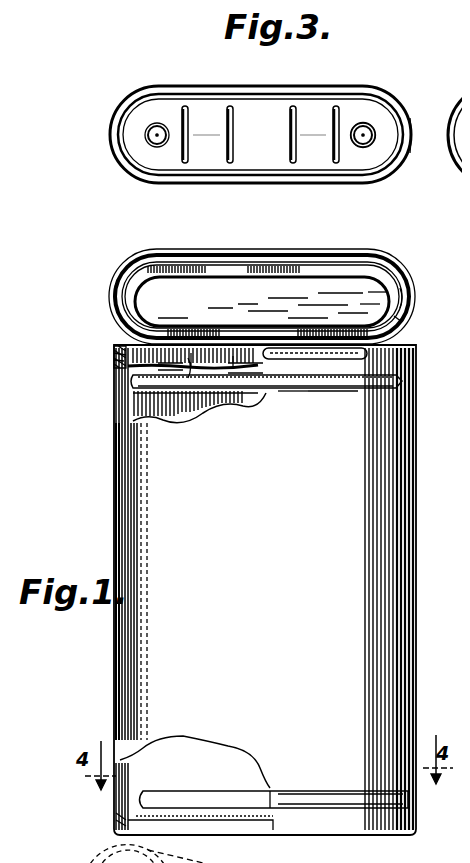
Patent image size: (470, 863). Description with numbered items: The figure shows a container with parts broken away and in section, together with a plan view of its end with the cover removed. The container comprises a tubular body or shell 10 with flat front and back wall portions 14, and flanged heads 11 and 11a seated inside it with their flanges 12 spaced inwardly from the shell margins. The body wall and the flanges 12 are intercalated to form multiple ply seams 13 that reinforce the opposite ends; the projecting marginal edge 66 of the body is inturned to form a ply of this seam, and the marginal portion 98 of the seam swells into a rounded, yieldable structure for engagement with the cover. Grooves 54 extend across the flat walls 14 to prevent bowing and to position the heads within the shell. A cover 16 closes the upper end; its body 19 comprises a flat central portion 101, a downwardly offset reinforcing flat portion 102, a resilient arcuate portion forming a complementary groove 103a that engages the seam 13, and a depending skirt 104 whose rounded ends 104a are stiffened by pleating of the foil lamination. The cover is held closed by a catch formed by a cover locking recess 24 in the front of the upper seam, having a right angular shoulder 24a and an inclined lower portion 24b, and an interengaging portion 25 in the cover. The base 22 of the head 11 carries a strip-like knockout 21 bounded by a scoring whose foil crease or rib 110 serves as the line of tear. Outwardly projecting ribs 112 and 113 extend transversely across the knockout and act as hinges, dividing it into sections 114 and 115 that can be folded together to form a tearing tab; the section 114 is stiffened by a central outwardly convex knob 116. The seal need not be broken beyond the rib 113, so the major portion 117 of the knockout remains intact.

In FIG. 1, the tubular body or shell 10 is at (402, 430).
In FIG. 1, the flanged head 11 is at (207, 367).
In FIG. 1, the flanged head 11a is at (248, 813).
In FIG. 1, the flange 12 is at (112, 815).
In FIG. 3, the multiple ply seam or joint 13 is at (380, 157).
In FIG. 1, the multiple ply seam or joint 13 is at (105, 353).
In FIG. 1, the straight or flat front and back wall portion 14 is at (330, 510).
In FIG. 1, the cover 16 is at (315, 282).
In FIG. 1, the reinforcement engaging portion or body of the cover 19 is at (388, 316).
In FIG. 3, the knockout 21 is at (260, 107).
In FIG. 1, the base of the head 22 is at (233, 380).
In FIG. 1, the cover locking recess 24 is at (350, 346).
In FIG. 1, the right angular shoulder 24a is at (330, 350).
In FIG. 1, the inclined lower portion 24b is at (353, 383).
In FIG. 1, the interengaging portion of the cover 25 is at (187, 253).
In FIG. 1, the groove 54 is at (307, 378).
In FIG. 1, the projecting marginal edge of the body 66 is at (117, 338).
In FIG. 1, the marginal portion of the seam 98 is at (108, 338).
In FIG. 1, the flat central portion 101 is at (366, 289).
In FIG. 1, the downwardly offset reinforcing flat portion 102 is at (363, 298).
In FIG. 1, the complementary groove 103a is at (373, 255).
In FIG. 1, the peripheral depending flange or skirt 104 is at (393, 302).
In FIG. 1, the rounded or curved ends of the flange 104a is at (112, 285).
In FIG. 3, the crease or rib in the foil 110 is at (383, 108).
In FIG. 3, the outwardly projecting rib or bead 112 is at (172, 100).
In FIG. 1, the outwardly projecting rib or bead 112 is at (187, 357).
In FIG. 3, the outwardly projecting rib or bead 113 is at (227, 107).
In FIG. 1, the outwardly projecting rib or bead 113 is at (230, 327).
In FIG. 3, the section of the knockout 114 is at (140, 104).
In FIG. 3, the section of the knockout 115 is at (198, 140).
In FIG. 3, the outwardly convex knob or protuberance 116 is at (152, 110).
In FIG. 1, the outwardly convex knob or protuberance 116 is at (157, 360).
In FIG. 3, the major portion of the seal 117 is at (300, 143).